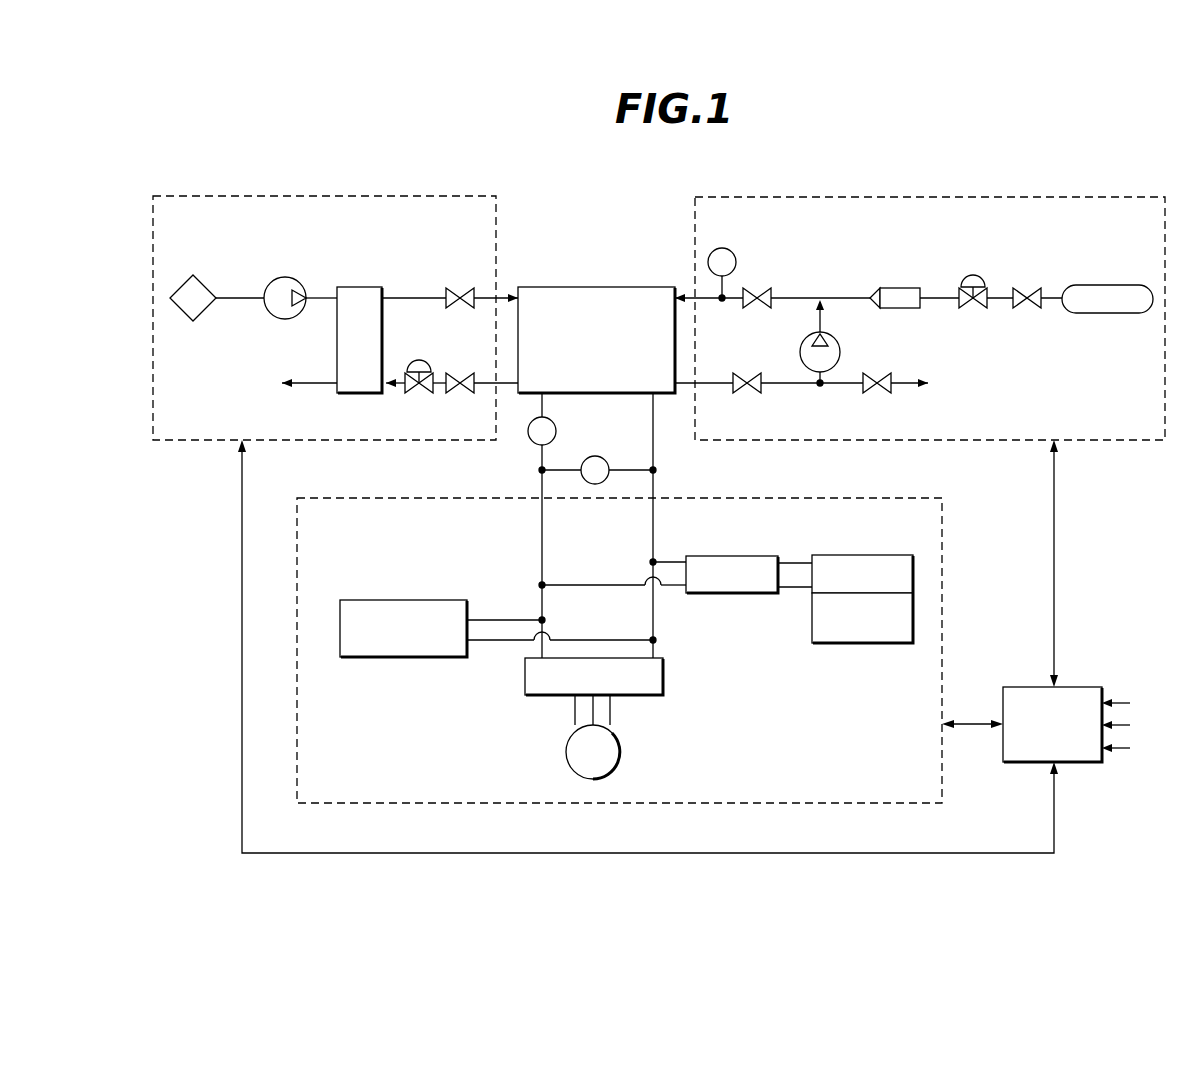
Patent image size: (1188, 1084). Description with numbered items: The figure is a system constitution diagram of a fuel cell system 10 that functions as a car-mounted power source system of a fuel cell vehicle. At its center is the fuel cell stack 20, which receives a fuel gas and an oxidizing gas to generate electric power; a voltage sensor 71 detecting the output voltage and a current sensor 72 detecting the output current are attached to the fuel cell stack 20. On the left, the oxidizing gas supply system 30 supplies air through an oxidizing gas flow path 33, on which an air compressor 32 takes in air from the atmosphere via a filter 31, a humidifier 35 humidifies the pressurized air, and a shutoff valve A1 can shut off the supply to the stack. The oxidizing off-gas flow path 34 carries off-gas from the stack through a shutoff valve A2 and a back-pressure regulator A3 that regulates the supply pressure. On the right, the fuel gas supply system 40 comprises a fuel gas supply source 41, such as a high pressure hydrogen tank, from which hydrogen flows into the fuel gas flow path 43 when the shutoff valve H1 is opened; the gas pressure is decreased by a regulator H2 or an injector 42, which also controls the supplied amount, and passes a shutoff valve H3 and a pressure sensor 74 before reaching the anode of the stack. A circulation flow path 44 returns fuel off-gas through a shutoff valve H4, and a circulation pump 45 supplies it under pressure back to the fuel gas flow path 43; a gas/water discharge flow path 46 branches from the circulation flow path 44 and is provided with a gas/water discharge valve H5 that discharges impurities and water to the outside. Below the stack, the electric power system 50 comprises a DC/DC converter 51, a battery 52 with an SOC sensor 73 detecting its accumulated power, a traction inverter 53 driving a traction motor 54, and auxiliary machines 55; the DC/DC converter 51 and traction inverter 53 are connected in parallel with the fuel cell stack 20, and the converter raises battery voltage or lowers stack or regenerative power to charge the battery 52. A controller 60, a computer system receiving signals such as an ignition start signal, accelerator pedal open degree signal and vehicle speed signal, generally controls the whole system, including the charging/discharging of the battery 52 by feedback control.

The fuel cell system 10 is at (1150, 168).
The fuel cell stack 20 is at (597, 287).
The oxidizing gas supply system 30 is at (285, 196).
The filter 31 is at (208, 284).
The air compressor 32 is at (283, 277).
The oxidizing gas flow path 33 is at (403, 298).
The oxidizing off-gas flow path 34 is at (486, 383).
The humidifier 35 is at (360, 287).
The shutoff valve A1 is at (455, 289).
The shutoff valve A2 is at (455, 393).
The back-pressure regulator A3 is at (425, 361).
The fuel gas supply system 40 is at (1005, 197).
The fuel gas supply source 41 is at (1105, 285).
The injector 42 is at (900, 288).
The fuel gas flow path 43 is at (795, 298).
The circulation flow path 44 is at (790, 383).
The circulation pump 45 is at (840, 352).
The gas/water discharge flow path 46 is at (905, 383).
The shutoff valve H1 is at (1030, 290).
The regulator H2 is at (975, 275).
The shutoff valve H3 is at (760, 290).
The shutoff valve H4 is at (752, 393).
The gas/water discharge valve H5 is at (880, 393).
The electric power system 50 is at (942, 565).
The DC/DC converter 51 is at (730, 556).
The battery 52 is at (860, 555).
The traction inverter 53 is at (663, 676).
The traction motor 54 is at (621, 748).
The auxiliary machines 55 is at (420, 600).
The controller 60 is at (1080, 687).
The voltage sensor 71 is at (588, 458).
The current sensor 72 is at (530, 440).
The SOC sensor 73 is at (840, 643).
The pressure sensor 74 is at (722, 248).